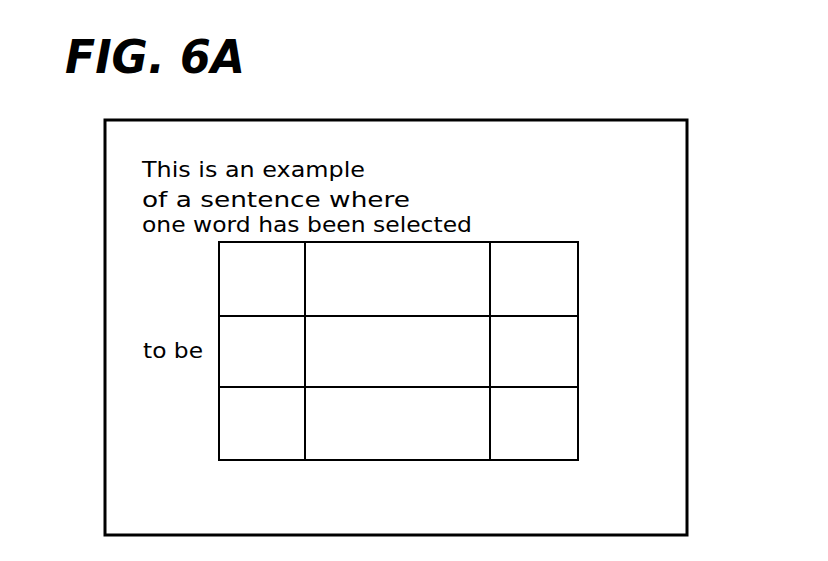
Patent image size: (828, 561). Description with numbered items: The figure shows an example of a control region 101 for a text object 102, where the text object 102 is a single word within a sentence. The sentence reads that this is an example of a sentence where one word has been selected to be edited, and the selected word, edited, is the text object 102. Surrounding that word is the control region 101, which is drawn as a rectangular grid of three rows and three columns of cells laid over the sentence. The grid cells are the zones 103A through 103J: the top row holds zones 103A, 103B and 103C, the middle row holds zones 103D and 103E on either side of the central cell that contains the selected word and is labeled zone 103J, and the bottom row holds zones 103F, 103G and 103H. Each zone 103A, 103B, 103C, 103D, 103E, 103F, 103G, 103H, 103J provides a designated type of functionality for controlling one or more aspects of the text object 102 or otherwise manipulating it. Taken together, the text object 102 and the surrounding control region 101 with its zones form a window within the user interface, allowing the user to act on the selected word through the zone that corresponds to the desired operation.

The control region 101 is at (660, 210).
The text object 102 is at (363, 373).
The zone 103A is at (294, 294).
The zone 103B is at (428, 294).
The zone 103C is at (568, 294).
The zone 103D is at (294, 362).
The zone 103E is at (566, 362).
The zone 103F is at (293, 434).
The zone 103G is at (439, 434).
The zone 103H is at (569, 434).
The zone 103J is at (479, 376).